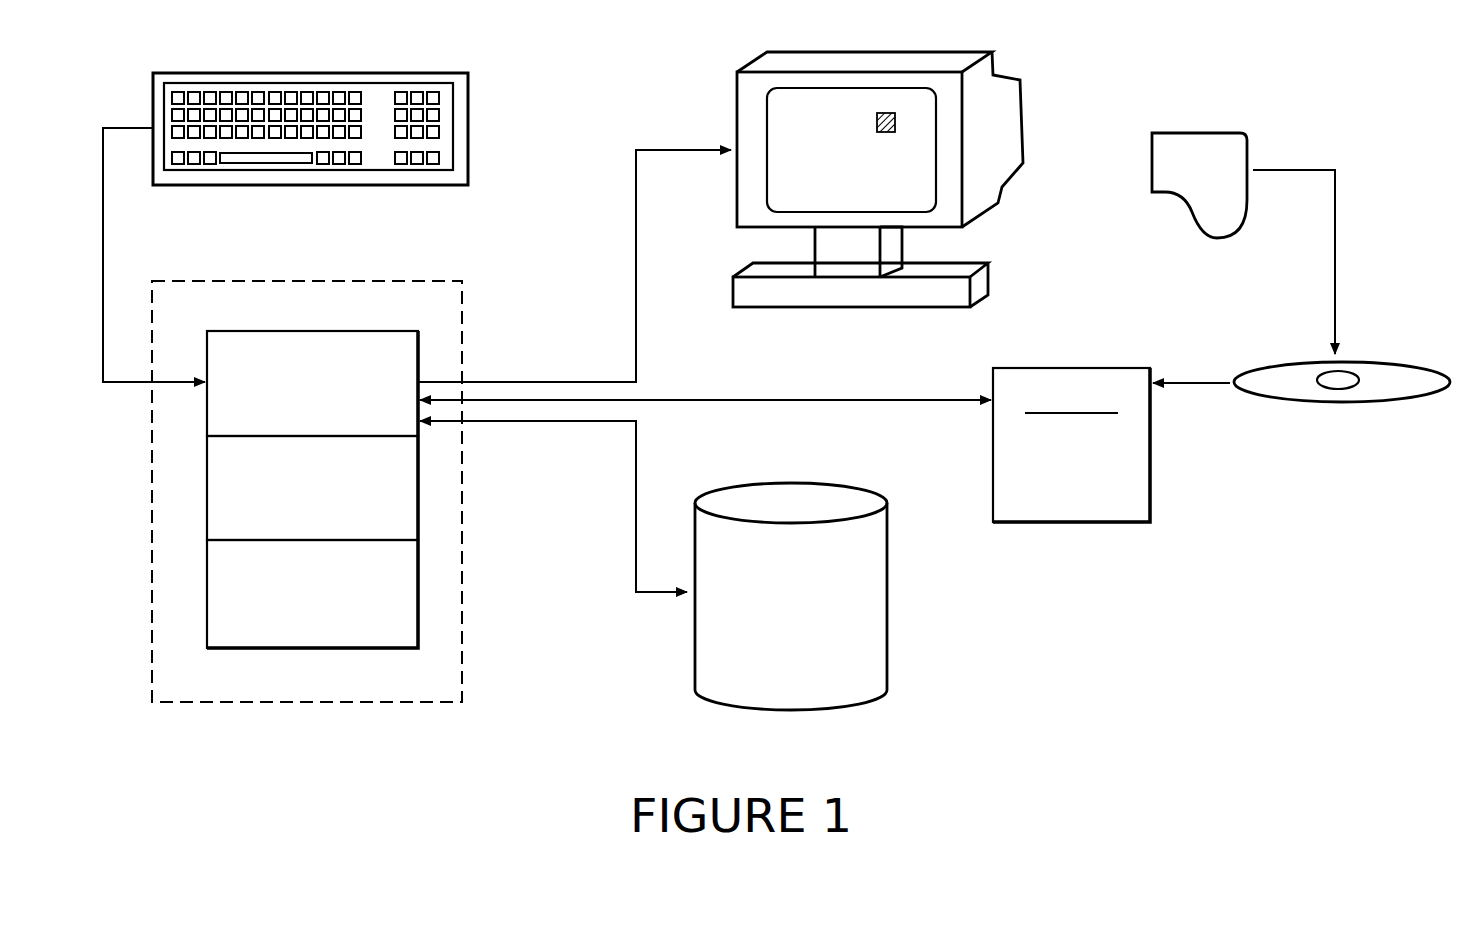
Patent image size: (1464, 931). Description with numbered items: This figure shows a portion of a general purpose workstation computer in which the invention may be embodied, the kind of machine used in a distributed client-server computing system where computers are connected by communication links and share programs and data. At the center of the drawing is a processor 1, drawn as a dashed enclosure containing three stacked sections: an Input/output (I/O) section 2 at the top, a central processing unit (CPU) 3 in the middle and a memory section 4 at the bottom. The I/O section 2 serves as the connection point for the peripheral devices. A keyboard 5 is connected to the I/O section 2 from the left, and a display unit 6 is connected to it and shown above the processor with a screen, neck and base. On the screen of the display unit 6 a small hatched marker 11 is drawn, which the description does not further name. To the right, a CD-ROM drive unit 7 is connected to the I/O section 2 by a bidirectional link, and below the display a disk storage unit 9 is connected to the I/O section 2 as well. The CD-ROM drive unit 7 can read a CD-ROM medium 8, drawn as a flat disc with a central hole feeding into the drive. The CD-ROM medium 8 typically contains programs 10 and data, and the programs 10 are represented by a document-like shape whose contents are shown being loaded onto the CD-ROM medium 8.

The processor 1 is at (360, 280).
The Input/output section 2 is at (267, 330).
The central processing unit 3 is at (418, 496).
The memory section 4 is at (420, 593).
The keyboard 5 is at (470, 120).
The display unit 6 is at (735, 107).
The CD-ROM drive unit 7 is at (1062, 367).
The CD-ROM medium 8 is at (1292, 362).
The disk storage unit 9 is at (888, 607).
The programs 10 is at (1185, 132).
The icon on display 11 is at (893, 113).